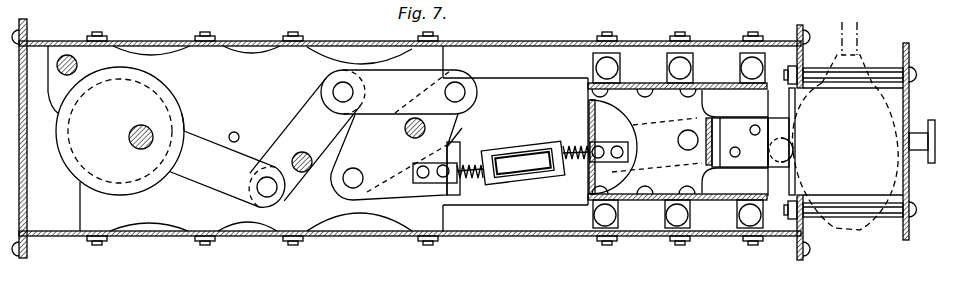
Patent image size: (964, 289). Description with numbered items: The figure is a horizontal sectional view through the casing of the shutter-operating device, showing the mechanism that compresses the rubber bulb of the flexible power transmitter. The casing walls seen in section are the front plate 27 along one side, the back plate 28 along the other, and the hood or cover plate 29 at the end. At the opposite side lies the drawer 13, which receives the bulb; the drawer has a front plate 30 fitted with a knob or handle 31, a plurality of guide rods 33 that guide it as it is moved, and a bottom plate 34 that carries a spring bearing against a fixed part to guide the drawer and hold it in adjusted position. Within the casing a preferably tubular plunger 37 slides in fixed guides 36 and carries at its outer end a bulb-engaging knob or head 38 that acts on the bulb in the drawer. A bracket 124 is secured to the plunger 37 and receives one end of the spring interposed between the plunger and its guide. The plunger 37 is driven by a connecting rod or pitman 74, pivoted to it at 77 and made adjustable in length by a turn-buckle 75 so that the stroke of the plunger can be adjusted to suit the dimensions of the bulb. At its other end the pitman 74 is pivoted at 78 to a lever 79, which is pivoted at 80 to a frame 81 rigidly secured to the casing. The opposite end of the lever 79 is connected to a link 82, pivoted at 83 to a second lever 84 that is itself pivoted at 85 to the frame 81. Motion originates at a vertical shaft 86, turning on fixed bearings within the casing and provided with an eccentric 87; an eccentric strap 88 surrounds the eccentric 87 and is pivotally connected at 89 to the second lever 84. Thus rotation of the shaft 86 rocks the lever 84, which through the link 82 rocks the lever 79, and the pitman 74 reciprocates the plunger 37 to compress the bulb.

The drawer 13 is at (843, 132).
The front plate 27 is at (642, 39).
The back plate 28 is at (410, 237).
The hood or cover plate 29 is at (20, 102).
The front plate 30 is at (908, 113).
The knob or handle 31 is at (933, 128).
The guide rods 33 is at (862, 81).
The bottom plate 34 is at (880, 188).
The fixed guides 36 is at (716, 83).
The plunger 37 is at (590, 101).
The bulb-engaging knob or head 38 is at (790, 155).
The connecting rod or pitman 74 is at (432, 192).
The turn-buckle 75 is at (517, 148).
The pivot 77 is at (683, 144).
The pivot 78 is at (349, 183).
The lever 79 is at (439, 136).
The pivot 80 is at (406, 133).
The frame 81 is at (445, 213).
The link 82 is at (407, 78).
The pivot 83 is at (333, 92).
The second lever 84 is at (298, 139).
The pivot 85 is at (294, 157).
The vertical shaft 86 is at (140, 126).
The eccentric 87 is at (183, 113).
The eccentric strap 88 is at (193, 143).
The pivot 89 is at (257, 181).
The bracket 124 is at (735, 143).